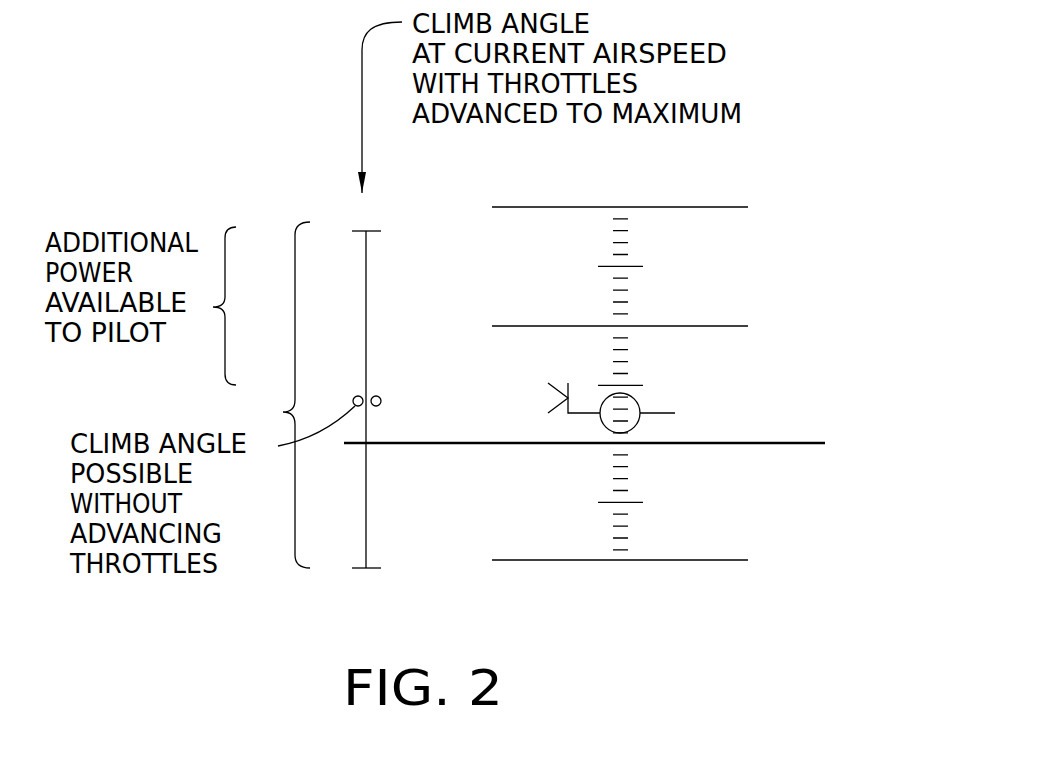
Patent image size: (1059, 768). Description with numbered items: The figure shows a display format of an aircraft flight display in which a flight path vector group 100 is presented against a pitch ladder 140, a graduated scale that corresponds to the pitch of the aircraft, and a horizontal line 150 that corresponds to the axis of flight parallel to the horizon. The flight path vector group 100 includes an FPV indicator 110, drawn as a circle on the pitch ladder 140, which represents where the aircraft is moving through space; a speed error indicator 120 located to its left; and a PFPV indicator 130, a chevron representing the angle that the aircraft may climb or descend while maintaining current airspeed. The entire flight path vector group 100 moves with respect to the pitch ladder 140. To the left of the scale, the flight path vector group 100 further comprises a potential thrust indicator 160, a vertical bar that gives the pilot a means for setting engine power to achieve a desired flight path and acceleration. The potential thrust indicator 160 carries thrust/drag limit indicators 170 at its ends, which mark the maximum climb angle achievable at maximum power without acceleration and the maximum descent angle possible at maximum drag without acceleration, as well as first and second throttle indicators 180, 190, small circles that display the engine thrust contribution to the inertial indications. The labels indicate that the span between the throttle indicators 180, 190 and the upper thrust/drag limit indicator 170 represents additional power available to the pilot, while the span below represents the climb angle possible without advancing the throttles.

The flight path vector group 100 is at (826, 133).
The FPV indicator 110 is at (630, 430).
The speed error indicator 120 is at (562, 383).
The PFPV indicator 130 is at (555, 398).
The pitch ladder 140 is at (830, 167).
The horizontal line 150 is at (745, 443).
The potential thrust indicator 160 is at (343, 395).
The thrust/drag limit indicators 170 is at (373, 232).
The first throttle indicator 180 is at (358, 396).
The second throttle indicator 190 is at (376, 406).